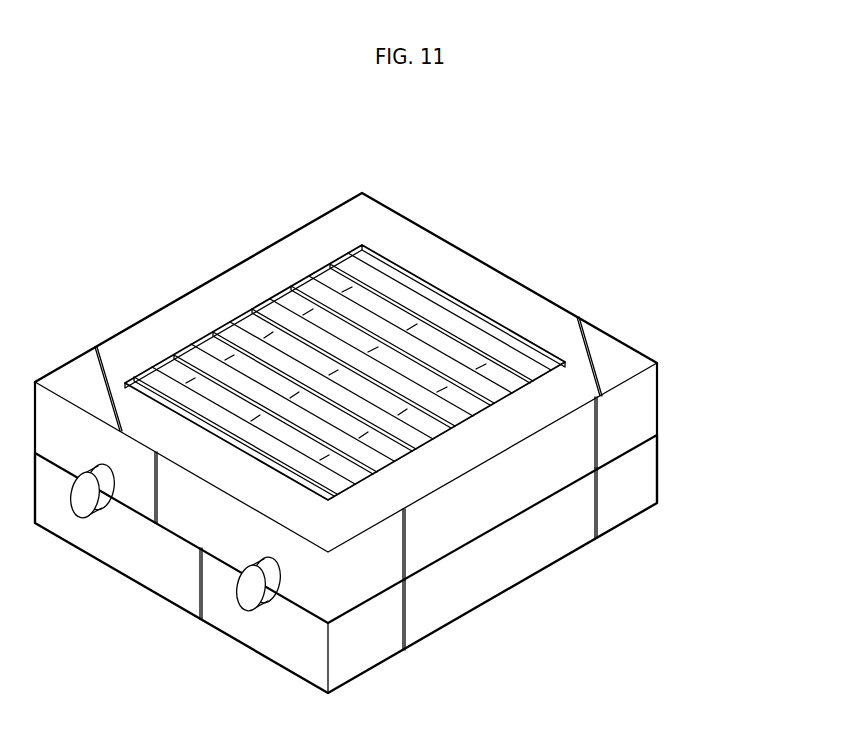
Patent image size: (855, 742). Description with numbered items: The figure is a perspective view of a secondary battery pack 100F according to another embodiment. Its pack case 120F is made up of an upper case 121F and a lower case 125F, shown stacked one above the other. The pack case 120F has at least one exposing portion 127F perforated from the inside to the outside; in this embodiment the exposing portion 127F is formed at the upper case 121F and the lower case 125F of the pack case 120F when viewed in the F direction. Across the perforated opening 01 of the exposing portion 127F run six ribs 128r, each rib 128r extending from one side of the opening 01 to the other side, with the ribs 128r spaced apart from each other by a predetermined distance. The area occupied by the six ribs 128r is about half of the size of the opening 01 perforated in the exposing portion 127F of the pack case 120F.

The battery module / cell housing assembly 100F is at (184, 122).
The pack case 120F is at (723, 393).
The upper case 121F is at (645, 413).
The lower case 125F is at (645, 470).
The exposing portion 127F is at (430, 287).
The rib 128r is at (352, 262).
The perforated opening 01 is at (454, 341).